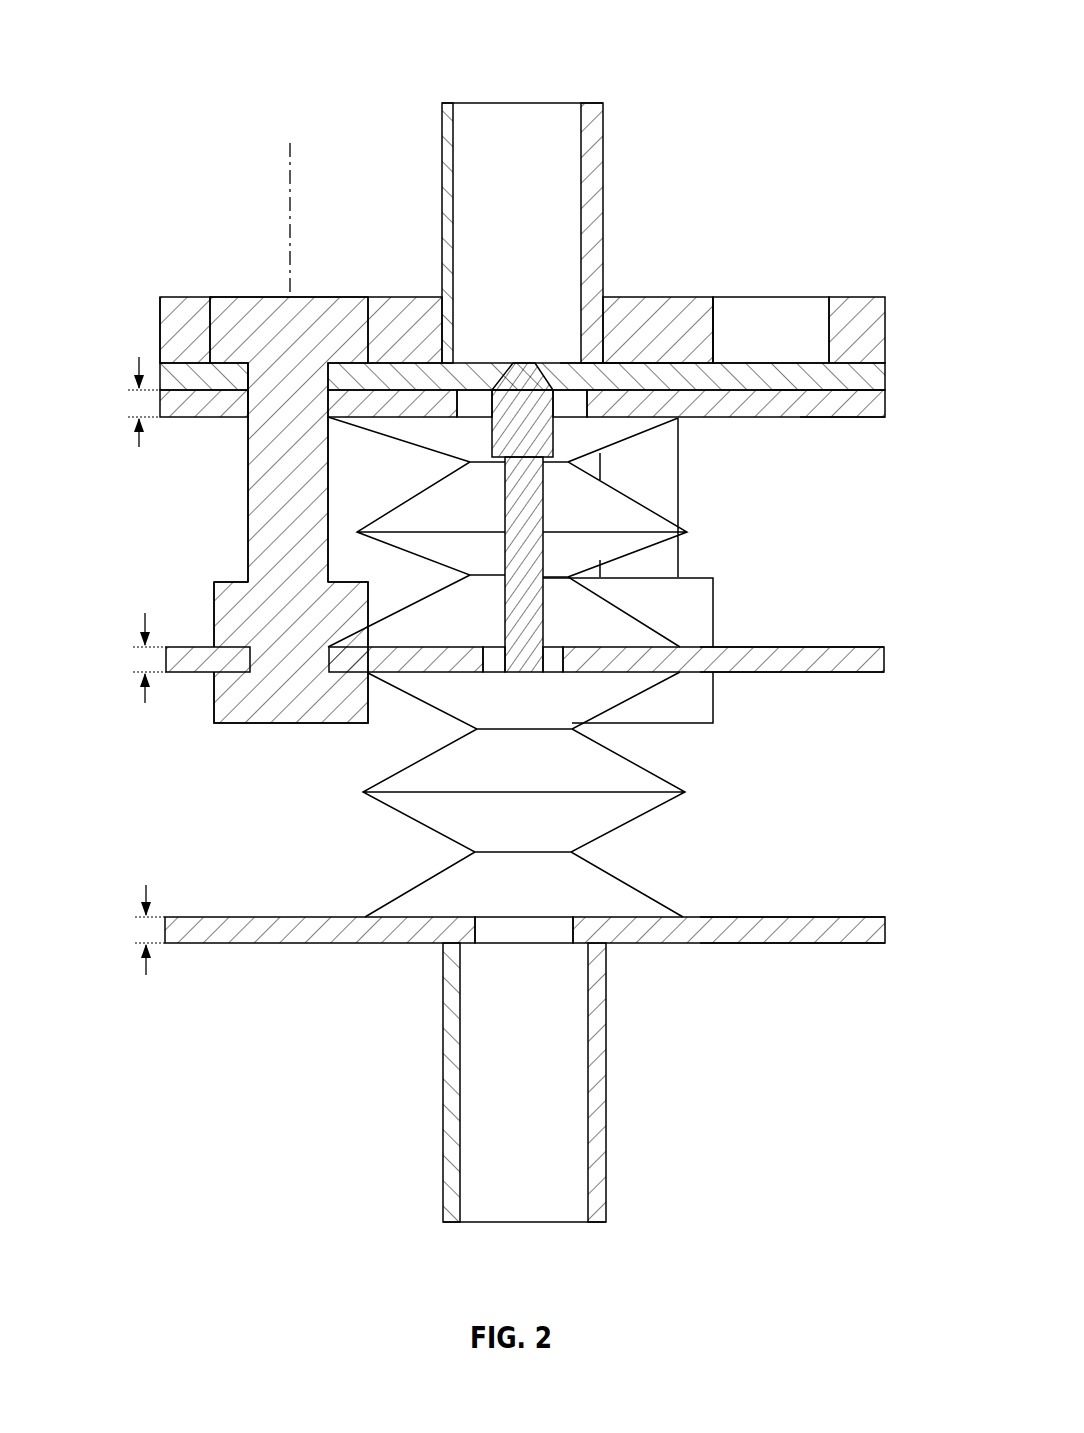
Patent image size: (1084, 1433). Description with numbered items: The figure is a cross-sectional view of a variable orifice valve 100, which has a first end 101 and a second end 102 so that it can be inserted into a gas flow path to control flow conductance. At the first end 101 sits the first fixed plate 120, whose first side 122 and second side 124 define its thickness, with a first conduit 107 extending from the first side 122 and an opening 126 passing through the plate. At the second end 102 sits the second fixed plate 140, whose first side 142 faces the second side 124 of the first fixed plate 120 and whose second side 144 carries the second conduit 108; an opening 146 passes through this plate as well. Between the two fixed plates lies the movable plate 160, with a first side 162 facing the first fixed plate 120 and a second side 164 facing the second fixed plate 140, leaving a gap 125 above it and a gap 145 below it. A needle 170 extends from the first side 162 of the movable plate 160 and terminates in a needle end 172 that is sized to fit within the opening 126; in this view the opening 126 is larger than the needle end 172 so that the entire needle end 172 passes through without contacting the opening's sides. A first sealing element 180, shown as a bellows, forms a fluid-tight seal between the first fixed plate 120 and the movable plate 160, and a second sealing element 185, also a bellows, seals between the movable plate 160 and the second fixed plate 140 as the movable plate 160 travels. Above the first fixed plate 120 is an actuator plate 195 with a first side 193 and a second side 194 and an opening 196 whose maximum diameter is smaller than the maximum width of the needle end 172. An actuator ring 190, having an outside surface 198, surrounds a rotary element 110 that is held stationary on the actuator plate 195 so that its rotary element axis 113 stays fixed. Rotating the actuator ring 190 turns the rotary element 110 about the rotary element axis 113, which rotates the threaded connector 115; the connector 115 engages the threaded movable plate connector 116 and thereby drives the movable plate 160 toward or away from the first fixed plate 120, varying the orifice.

The variable orifice valve 100 is at (267, 47).
The first end 101 is at (559, 194).
The second end 102 is at (562, 1111).
The first conduit 107 is at (600, 147).
The second conduit 108 is at (607, 1080).
The rotary element 110 is at (233, 298).
The rotary element axis 113 is at (292, 230).
The connector 115 is at (262, 480).
The movable plate connector 116 is at (214, 610).
The first fixed plate 120 is at (870, 405).
The first side 122 is at (840, 385).
The second side 124 is at (843, 424).
The gap 125 is at (127, 517).
The opening 126 is at (571, 397).
The second fixed plate 140 is at (873, 927).
The first side 142 is at (840, 913).
The second side 144 is at (837, 946).
The gap 145 is at (137, 824).
The opening 146 is at (488, 930).
The movable plate 160 is at (868, 655).
The first side 162 is at (857, 644).
The second side 164 is at (852, 675).
The needle 170 is at (530, 600).
The needle end 172 is at (531, 400).
The first sealing element 180 is at (615, 548).
The second sealing element 185 is at (628, 805).
The actuator ring 190 is at (870, 325).
The first side 193 is at (562, 373).
The second side 194 is at (800, 394).
The actuator plate 195 is at (870, 380).
The opening 196 is at (693, 356).
The outside surface 198 is at (158, 329).